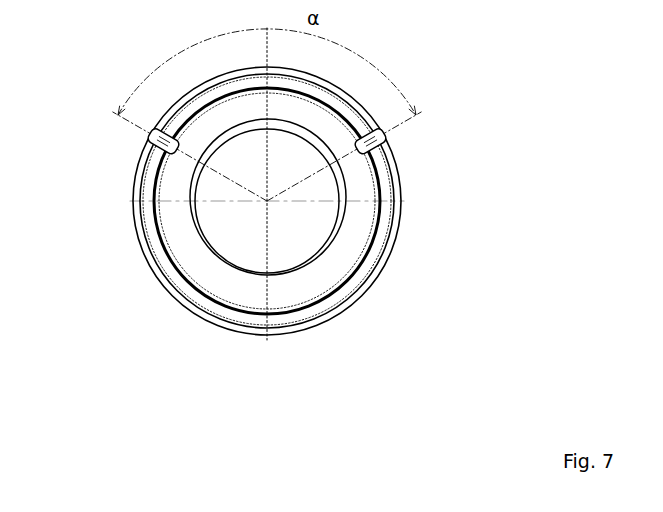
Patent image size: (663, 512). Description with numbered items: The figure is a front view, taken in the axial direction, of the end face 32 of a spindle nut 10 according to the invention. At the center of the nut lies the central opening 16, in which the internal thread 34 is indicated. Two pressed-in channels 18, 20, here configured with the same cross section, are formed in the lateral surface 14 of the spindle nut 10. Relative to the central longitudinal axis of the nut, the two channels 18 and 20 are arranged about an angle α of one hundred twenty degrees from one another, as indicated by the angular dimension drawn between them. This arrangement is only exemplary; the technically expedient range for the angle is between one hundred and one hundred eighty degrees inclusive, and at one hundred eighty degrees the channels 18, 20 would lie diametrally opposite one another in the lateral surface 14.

The spindle nut 10 is at (386, 349).
The lateral surface 14 is at (195, 313).
The central opening 16 is at (288, 243).
The pressed-in channel 18 is at (397, 134).
The pressed-in channel 20 is at (138, 135).
The end face 32 is at (239, 285).
The internal thread 34 is at (214, 186).